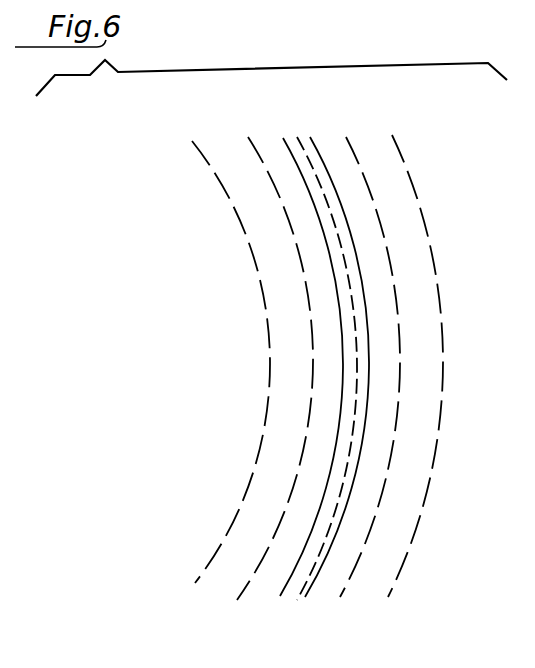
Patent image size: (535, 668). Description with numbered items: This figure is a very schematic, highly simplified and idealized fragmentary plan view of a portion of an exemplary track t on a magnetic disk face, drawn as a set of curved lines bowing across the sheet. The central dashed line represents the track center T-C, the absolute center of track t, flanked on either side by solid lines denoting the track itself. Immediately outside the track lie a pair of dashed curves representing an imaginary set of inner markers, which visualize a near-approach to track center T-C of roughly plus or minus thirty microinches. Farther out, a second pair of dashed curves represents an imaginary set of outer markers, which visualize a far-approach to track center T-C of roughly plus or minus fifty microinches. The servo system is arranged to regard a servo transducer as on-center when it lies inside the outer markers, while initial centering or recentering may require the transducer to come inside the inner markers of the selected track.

The track t is at (325, 147).
The track center T-C is at (294, 603).